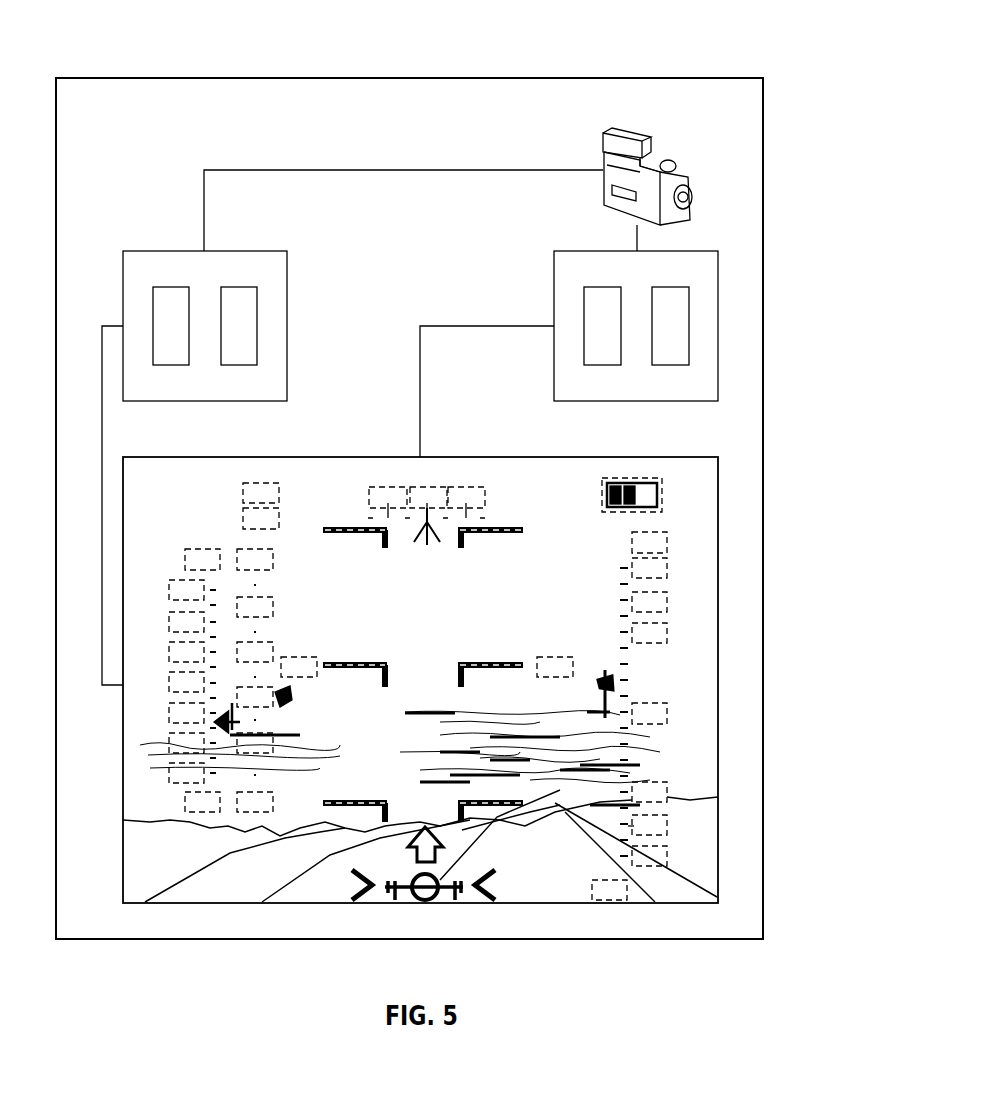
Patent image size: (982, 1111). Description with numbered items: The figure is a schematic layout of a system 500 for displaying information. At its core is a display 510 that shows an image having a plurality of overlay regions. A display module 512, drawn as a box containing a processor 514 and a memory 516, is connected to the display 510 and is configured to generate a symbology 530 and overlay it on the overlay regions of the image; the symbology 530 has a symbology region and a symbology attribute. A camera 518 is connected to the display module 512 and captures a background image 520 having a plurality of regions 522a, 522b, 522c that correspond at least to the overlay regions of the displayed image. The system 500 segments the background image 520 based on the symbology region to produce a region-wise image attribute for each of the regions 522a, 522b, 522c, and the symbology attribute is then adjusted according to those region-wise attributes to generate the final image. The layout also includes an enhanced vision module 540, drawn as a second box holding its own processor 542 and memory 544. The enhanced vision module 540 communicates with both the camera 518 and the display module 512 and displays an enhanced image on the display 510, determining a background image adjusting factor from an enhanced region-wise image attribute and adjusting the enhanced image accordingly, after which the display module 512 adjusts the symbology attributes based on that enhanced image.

The system for displaying information 500 is at (132, 42).
The display 510 is at (186, 457).
The display module 512 is at (617, 250).
The processor 514 is at (670, 365).
The memory 516 is at (602, 365).
The camera 518 is at (652, 146).
The background image 520 is at (510, 903).
The region of background image 522a is at (633, 786).
The region of background image 522b is at (633, 826).
The region of background image 522c is at (628, 858).
The symbology 530 is at (648, 703).
The enhanced vision module 540 is at (186, 250).
The processor 542 is at (153, 313).
The memory 544 is at (238, 365).